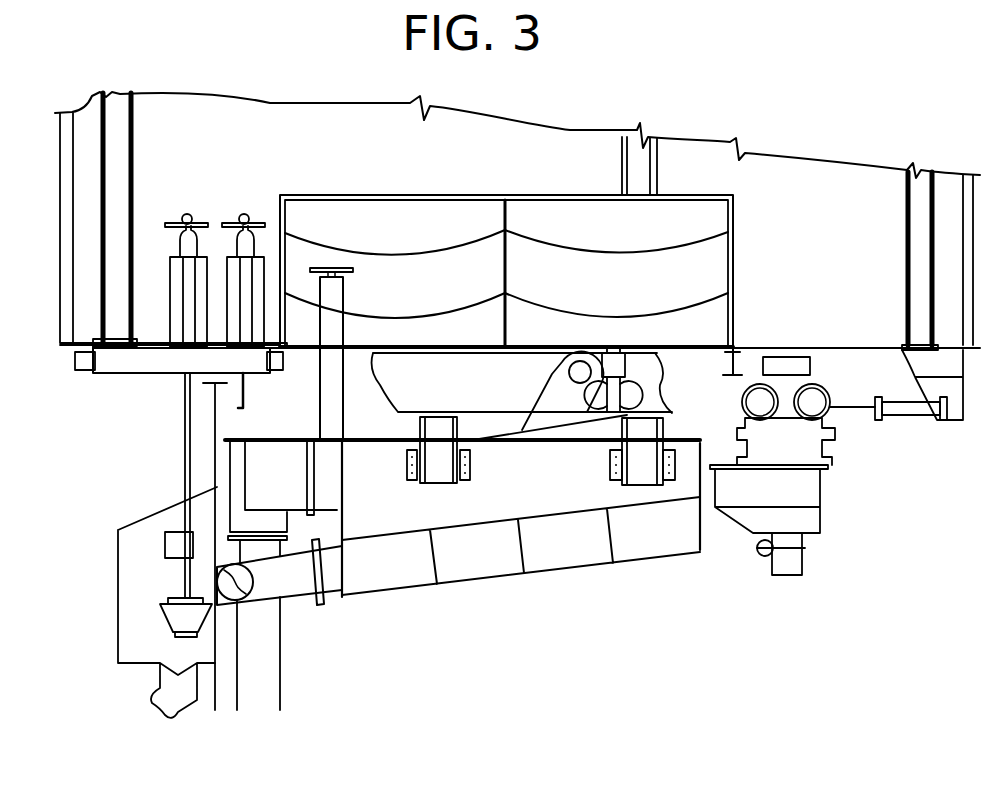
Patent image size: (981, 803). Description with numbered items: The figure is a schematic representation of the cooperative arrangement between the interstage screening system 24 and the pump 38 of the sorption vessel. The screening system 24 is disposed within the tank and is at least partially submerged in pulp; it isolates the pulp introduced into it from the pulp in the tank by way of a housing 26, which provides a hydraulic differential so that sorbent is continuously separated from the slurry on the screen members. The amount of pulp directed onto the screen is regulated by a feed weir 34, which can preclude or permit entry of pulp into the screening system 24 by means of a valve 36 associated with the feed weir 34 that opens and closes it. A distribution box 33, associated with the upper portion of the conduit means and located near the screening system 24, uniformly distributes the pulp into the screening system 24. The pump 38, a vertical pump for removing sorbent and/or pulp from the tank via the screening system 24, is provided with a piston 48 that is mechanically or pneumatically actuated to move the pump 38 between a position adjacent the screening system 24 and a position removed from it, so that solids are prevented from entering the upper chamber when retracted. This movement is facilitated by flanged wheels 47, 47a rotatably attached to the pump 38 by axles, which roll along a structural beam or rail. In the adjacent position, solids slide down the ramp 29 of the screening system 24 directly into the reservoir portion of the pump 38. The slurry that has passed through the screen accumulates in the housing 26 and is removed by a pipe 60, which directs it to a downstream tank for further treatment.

The screening system 24 is at (549, 485).
The housing 26 is at (700, 550).
The ramp 29 is at (722, 458).
The distribution box 33 is at (292, 485).
The feed weir 34 is at (246, 404).
The valve 36 is at (228, 222).
The pump 38 is at (835, 467).
The flanged wheel 47 is at (741, 404).
The flanged wheel 47a is at (810, 398).
The piston 48 is at (910, 416).
The pipe 60 is at (298, 597).